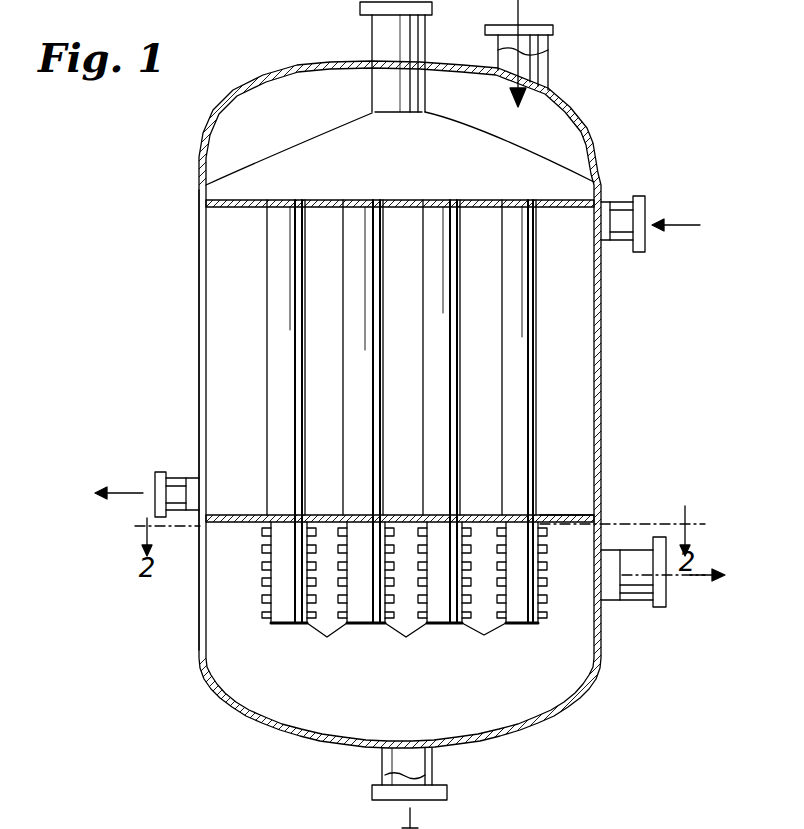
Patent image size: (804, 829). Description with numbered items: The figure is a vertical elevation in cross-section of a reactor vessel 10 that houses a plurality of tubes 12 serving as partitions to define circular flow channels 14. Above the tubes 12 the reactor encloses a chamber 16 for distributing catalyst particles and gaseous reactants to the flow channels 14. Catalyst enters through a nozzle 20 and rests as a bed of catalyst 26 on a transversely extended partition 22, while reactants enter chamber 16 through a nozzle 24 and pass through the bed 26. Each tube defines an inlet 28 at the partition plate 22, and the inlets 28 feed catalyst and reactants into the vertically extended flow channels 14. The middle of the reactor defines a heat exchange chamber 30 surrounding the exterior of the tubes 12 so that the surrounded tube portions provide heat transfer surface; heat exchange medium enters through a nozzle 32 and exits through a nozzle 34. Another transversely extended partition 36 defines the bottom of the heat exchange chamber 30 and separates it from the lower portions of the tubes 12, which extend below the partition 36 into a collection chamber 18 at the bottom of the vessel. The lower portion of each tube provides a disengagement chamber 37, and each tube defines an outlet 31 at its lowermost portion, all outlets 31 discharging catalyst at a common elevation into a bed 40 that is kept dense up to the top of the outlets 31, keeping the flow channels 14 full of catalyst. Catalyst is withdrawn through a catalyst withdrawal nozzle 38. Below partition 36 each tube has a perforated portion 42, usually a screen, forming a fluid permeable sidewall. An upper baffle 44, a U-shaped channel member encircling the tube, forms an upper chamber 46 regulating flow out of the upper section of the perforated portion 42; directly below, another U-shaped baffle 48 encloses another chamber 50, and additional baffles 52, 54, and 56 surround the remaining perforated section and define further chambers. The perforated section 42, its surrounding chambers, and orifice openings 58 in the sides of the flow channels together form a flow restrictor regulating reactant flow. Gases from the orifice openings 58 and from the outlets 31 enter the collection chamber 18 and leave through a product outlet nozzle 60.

The reactor vessel 10 is at (201, 245).
The tubes 12 is at (536, 330).
The flow channels 14 is at (522, 385).
The chamber 16 is at (543, 123).
The collection chamber 18 is at (568, 625).
The nozzle 20 is at (372, 37).
The transversely extended partition 22 is at (488, 200).
The nozzle 24 is at (548, 60).
The bed of catalyst 26 is at (375, 164).
The inlet 28 is at (522, 198).
The heat exchange chamber 30 is at (223, 360).
The outlet 31 is at (295, 624).
The nozzle 32 is at (612, 210).
The nozzle 34 is at (178, 478).
The transversely extended partition 36 is at (568, 512).
The disengagement chamber 37 is at (358, 557).
The catalyst withdrawal nozzle 38 is at (432, 760).
The bed 40 is at (375, 709).
The perforated portion 42 is at (281, 527).
The upper baffle 44 is at (555, 520).
The upper chamber 46 is at (265, 542).
The baffle 48 is at (263, 558).
The chamber 50 is at (547, 550).
The baffle 52 is at (263, 578).
The baffle 54 is at (263, 596).
The baffle 56 is at (266, 612).
The orifice openings 58 is at (266, 537).
The product outlet nozzle 60 is at (645, 607).